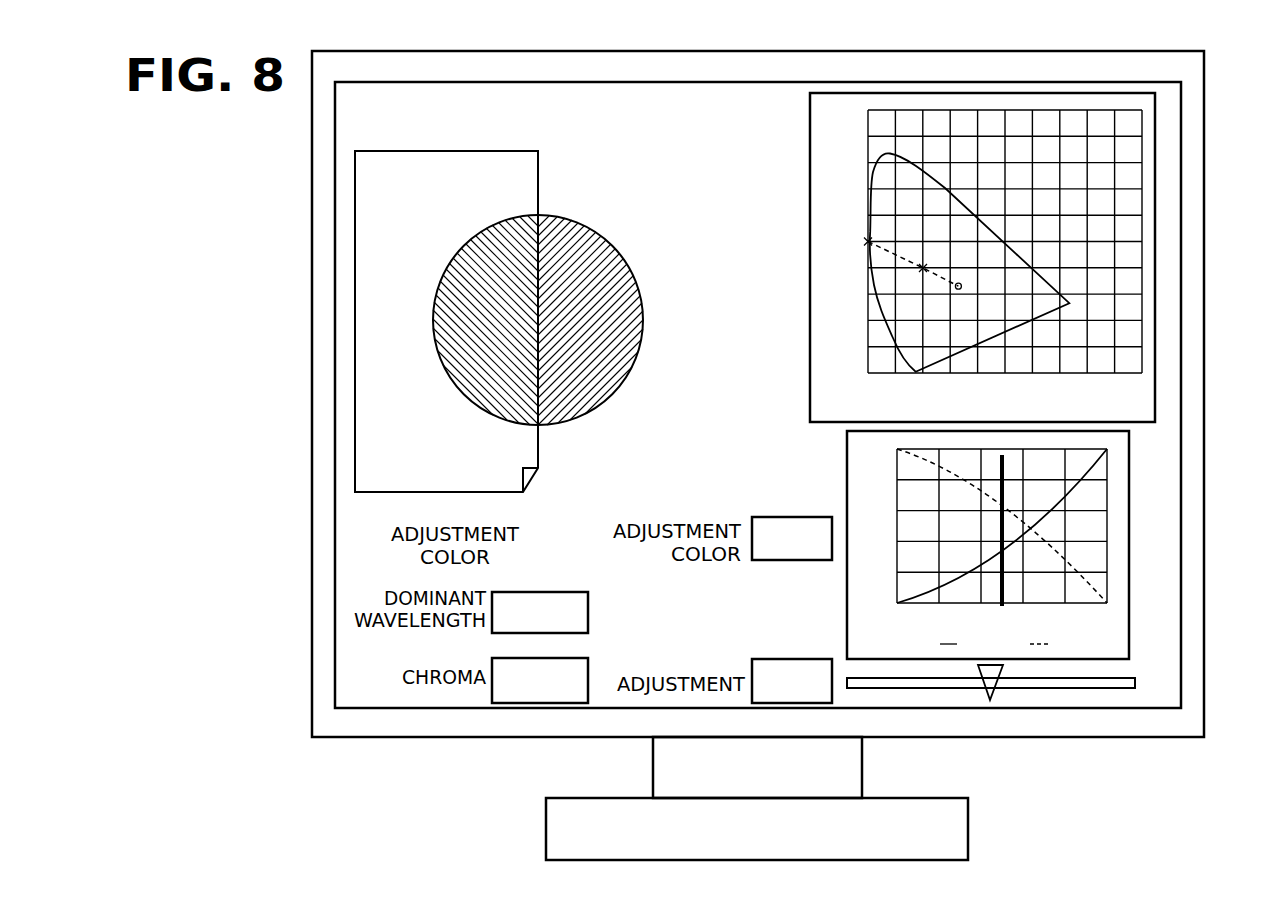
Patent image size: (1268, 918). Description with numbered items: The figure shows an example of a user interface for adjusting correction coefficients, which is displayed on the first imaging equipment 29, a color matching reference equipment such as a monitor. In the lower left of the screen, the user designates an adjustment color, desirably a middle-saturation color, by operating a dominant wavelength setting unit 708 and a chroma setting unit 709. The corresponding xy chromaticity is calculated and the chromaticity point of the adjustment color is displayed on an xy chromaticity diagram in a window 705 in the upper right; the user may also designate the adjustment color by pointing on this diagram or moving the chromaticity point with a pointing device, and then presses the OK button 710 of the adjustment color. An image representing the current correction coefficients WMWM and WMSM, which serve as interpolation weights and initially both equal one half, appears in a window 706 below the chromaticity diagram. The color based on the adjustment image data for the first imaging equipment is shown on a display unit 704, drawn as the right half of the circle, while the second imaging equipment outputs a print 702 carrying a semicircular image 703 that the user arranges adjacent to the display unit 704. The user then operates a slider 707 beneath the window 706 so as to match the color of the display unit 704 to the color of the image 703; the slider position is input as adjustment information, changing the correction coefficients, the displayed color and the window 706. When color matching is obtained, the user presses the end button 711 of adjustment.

The first imaging equipment 29 is at (1206, 72).
The print 702 is at (432, 151).
The semicircular image 703 is at (528, 215).
The display unit 704 is at (576, 223).
The window 705 is at (810, 122).
The window 706 is at (846, 445).
The slider 707 is at (991, 700).
The dominant wavelength setting unit 708 is at (600, 633).
The chroma setting unit 709 is at (510, 703).
The OK button 710 is at (785, 517).
The end button 711 is at (785, 659).